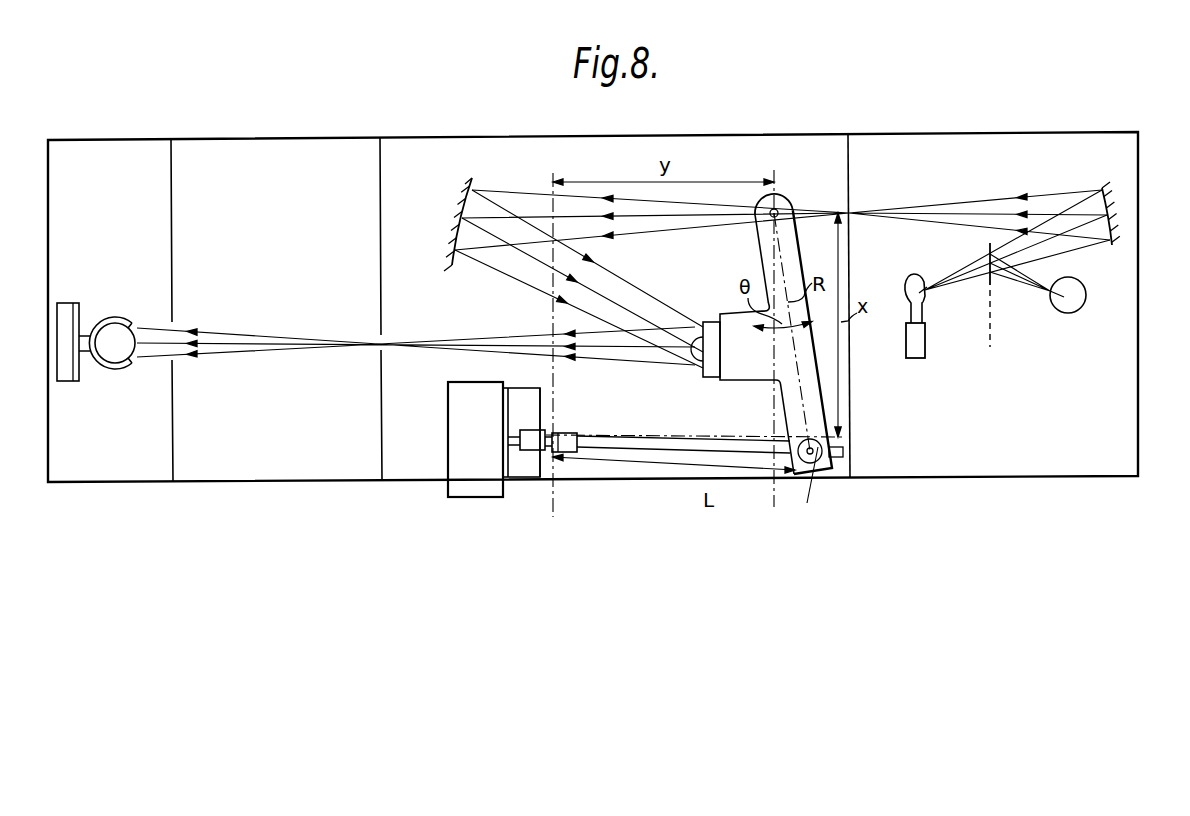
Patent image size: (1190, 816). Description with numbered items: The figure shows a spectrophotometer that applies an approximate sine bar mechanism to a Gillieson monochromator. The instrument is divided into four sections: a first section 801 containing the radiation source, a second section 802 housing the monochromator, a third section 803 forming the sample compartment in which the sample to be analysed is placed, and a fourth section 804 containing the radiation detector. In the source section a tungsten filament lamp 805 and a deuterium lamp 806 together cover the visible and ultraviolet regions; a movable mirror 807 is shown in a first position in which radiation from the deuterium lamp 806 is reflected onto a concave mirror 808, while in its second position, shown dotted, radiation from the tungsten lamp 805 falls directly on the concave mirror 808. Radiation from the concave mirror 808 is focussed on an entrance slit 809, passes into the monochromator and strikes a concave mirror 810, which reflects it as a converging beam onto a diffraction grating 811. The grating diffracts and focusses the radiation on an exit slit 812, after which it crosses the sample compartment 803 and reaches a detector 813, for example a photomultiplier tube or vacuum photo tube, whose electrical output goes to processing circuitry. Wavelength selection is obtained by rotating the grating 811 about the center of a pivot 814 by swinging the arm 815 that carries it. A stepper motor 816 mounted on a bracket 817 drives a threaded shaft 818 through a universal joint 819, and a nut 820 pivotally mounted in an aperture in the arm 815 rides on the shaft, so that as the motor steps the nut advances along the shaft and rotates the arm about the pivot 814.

The first section 801 is at (1113, 160).
The second section 802 is at (829, 162).
The third section 803 is at (350, 166).
The fourth section 804 is at (154, 167).
The tungsten filament lamp 805 is at (909, 300).
The deuterium lamp 806 is at (1072, 306).
The mirror 807 is at (992, 282).
The concave mirror 808 is at (1117, 207).
The entrance slit 809 is at (851, 213).
The concave mirror 810 is at (463, 181).
The diffraction grating 811 is at (698, 354).
The exit slit 812 is at (380, 342).
The detector 813 is at (126, 340).
The pivot 814 is at (790, 203).
The arm 815 is at (832, 384).
The stepper motor 816 is at (472, 491).
The bracket 817 is at (525, 472).
The threaded shaft 818 is at (668, 450).
The universal joint 819 is at (573, 458).
The nut 820 is at (813, 455).